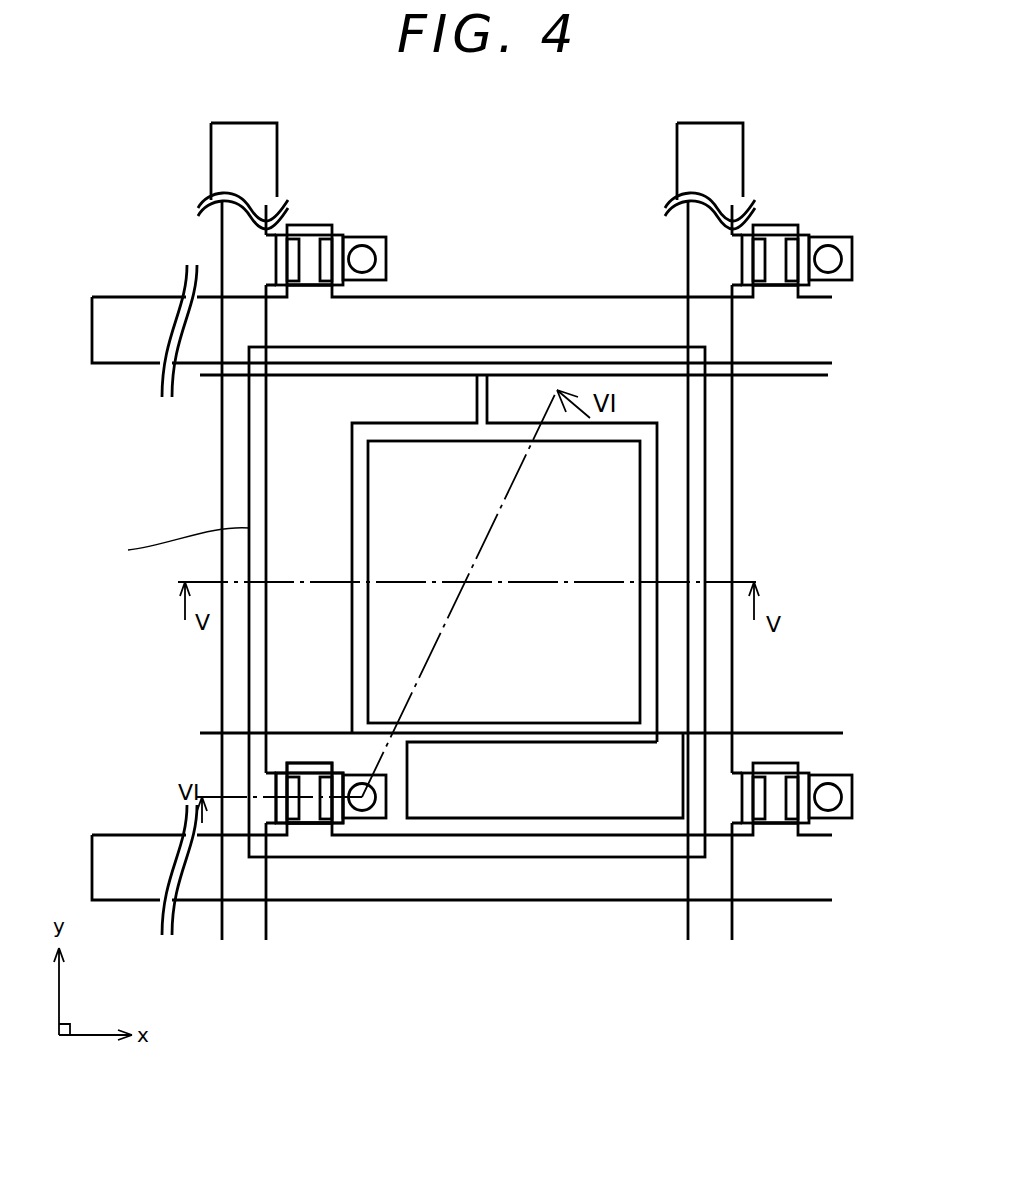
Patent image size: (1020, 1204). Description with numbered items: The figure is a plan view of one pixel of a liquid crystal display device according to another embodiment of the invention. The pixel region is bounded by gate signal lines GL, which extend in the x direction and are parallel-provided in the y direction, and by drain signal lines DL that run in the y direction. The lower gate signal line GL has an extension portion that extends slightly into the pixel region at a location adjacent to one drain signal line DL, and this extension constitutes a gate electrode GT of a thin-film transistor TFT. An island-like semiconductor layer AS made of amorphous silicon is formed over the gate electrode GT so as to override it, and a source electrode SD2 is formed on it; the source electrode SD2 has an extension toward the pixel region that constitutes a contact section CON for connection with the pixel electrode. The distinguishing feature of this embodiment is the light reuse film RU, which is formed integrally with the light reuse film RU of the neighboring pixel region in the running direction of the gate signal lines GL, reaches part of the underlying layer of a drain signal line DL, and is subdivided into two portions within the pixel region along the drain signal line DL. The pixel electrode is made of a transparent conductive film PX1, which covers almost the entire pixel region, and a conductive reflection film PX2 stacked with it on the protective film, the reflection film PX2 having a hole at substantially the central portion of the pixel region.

The gate signal line GL is at (490, 312).
The drain signal line DL is at (265, 157).
The light reuse film RU is at (300, 375).
The transparent conductive film PX1 is at (607, 527).
The conductive reflection film PX2 is at (707, 442).
The gate electrode GT is at (302, 767).
The semiconductor layer AS is at (308, 813).
The thin-film transistor TFT is at (313, 837).
The source electrode SD2 is at (358, 817).
The contact section CON is at (370, 815).